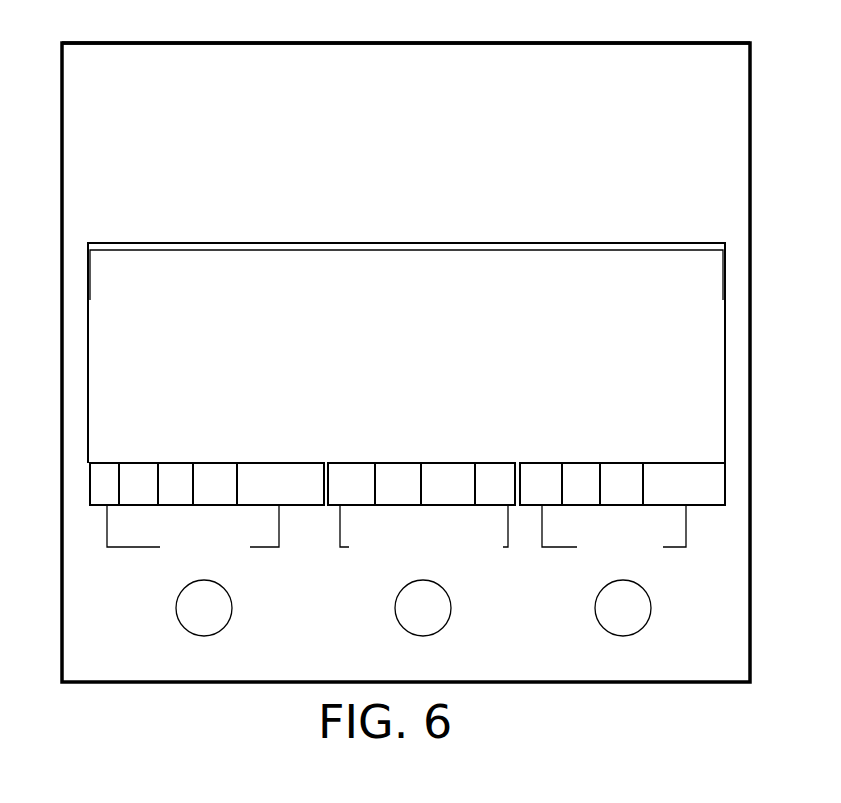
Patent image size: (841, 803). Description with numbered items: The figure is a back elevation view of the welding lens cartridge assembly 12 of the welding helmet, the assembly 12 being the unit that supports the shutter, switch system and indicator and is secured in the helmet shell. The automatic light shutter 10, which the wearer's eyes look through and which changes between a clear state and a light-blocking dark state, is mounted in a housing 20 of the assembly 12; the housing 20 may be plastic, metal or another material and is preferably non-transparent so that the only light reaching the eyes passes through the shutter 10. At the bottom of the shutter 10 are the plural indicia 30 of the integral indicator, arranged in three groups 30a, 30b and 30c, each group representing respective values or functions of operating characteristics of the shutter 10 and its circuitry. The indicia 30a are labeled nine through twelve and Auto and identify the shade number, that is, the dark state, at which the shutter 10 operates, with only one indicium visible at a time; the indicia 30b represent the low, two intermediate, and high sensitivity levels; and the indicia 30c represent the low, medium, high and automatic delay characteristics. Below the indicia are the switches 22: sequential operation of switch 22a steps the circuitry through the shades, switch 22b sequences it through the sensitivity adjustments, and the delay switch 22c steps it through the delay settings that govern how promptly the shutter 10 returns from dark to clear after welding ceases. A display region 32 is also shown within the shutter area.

The automatic light shutter 10 is at (125, 268).
The welding lens cartridge assembly 12 is at (500, 48).
The housing 20 is at (620, 62).
The switches 22 is at (364, 459).
The switch 22a is at (205, 617).
The switch 22b is at (430, 610).
The delay switch 22c is at (623, 613).
The indicia 30 is at (407, 433).
The indicia 30a is at (235, 458).
The indicia 30b is at (445, 458).
The indicia 30c is at (650, 458).
The display area 32 is at (665, 270).